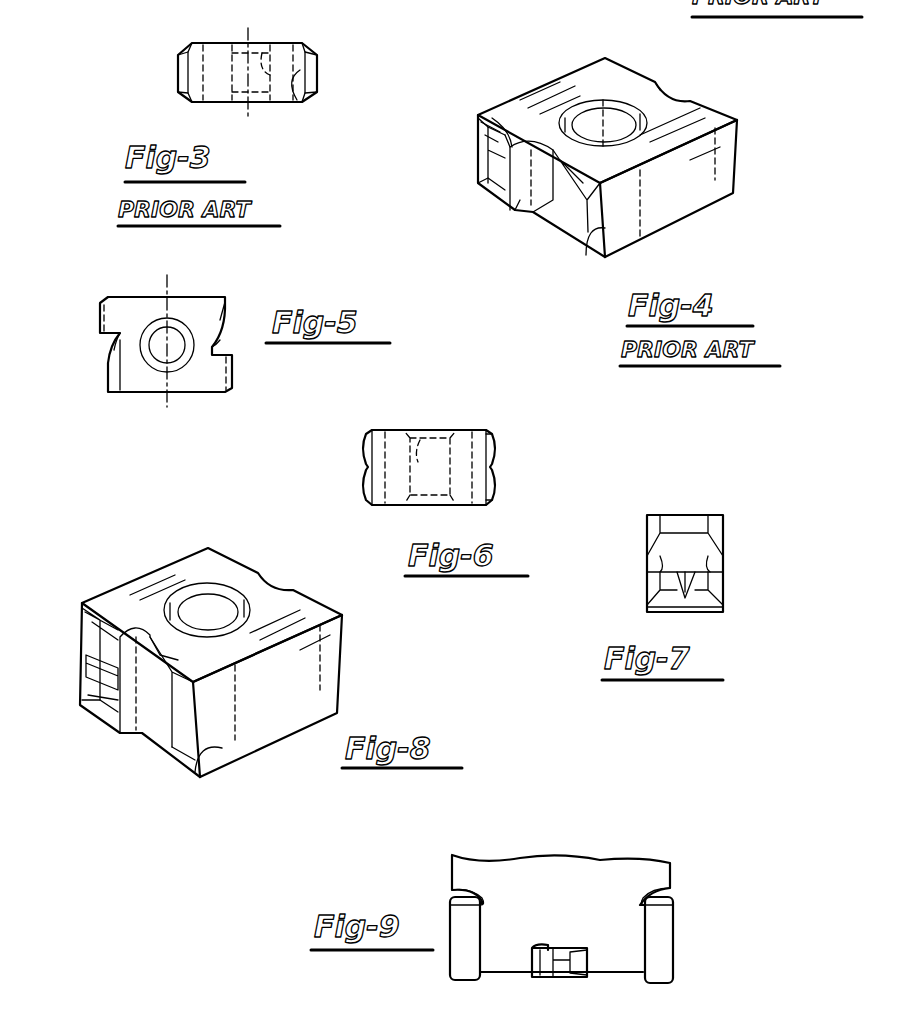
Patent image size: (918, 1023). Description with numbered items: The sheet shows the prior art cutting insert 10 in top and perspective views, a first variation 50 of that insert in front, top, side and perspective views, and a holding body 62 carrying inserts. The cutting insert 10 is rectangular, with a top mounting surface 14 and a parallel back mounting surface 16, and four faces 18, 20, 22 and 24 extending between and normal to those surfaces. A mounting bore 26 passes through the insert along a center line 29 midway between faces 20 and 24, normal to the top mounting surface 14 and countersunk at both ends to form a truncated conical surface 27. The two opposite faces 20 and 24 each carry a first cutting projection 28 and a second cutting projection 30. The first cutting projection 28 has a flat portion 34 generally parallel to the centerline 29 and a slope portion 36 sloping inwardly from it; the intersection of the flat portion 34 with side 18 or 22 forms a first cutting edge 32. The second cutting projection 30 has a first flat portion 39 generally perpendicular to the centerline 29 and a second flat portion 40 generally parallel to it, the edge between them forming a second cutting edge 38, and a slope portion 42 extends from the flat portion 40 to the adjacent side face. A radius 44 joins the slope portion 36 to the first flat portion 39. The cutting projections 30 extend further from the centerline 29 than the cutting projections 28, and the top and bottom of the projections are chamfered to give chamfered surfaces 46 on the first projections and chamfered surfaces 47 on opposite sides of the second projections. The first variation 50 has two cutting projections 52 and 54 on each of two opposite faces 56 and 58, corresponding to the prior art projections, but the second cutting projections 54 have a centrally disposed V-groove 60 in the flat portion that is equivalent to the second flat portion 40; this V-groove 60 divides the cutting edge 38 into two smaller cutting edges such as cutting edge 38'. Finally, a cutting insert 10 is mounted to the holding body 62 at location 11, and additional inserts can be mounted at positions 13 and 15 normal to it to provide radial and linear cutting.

In FIG. 9, the cutting insert 10 is at (675, 937).
In FIG. 9, the location 11 is at (533, 947).
In FIG. 9, the position 13 is at (653, 885).
In FIG. 3, the top mounting surface 14 is at (227, 103).
In FIG. 9, the position 15 is at (473, 883).
In FIG. 3, the back mounting surface 16 is at (292, 42).
In FIG. 4, the face 18 is at (545, 82).
In FIG. 5, the face 18 is at (187, 297).
In FIG. 7, the face 18 is at (667, 515).
In FIG. 4, the face 20 is at (682, 77).
In FIG. 8, the face 20 is at (277, 572).
In FIG. 4, the face 22 is at (682, 193).
In FIG. 5, the face 22 is at (195, 393).
In FIG. 7, the face 22 is at (713, 610).
In FIG. 8, the face 22 is at (273, 713).
In FIG. 4, the face 24 is at (500, 222).
In FIG. 8, the face 24 is at (130, 745).
In FIG. 3, the mounting bore 26 is at (268, 45).
In FIG. 4, the mounting bore 26 is at (593, 115).
In FIG. 5, the mounting bore 26 is at (155, 355).
In FIG. 6, the mounting bore 26 is at (422, 440).
In FIG. 8, the mounting bore 26 is at (212, 610).
In FIG. 3, the truncated conical surface 27 is at (240, 42).
In FIG. 4, the truncated conical surface 27 is at (630, 97).
In FIG. 6, the truncated conical surface 27 is at (415, 430).
In FIG. 3, the first cutting projection 28 is at (187, 80).
In FIG. 3, the center line 29 is at (262, 122).
In FIG. 3, the second cutting projection 30 is at (320, 63).
In FIG. 4, the first cutting edge 32 is at (602, 258).
In FIG. 8, the first cutting edge 32 is at (220, 767).
In FIG. 4, the flat portion 34 is at (575, 222).
In FIG. 4, the slope portion 36 is at (523, 217).
In FIG. 4, the second cutting edge 38 is at (476, 205).
In FIG. 4, the first flat portion 39 is at (520, 202).
In FIG. 4, the second flat portion 40 is at (500, 167).
In FIG. 4, the slope portion 42 is at (483, 150).
In FIG. 4, the radius 44 is at (510, 113).
In FIG. 3, the chamfered surface 46 is at (307, 48).
In FIG. 4, the chamfered surface 46 is at (487, 127).
In FIG. 3, the chamfered surface 47 is at (313, 53).
In FIG. 5, the first variation 50 is at (150, 285).
In FIG. 6, the first variation 50 is at (468, 425).
In FIG. 8, the first variation 50 is at (117, 572).
In FIG. 5, the cutting projection 52 is at (223, 313).
In FIG. 6, the cutting projection 52 is at (490, 487).
In FIG. 7, the cutting projection 52 is at (680, 522).
In FIG. 8, the cutting projection 52 is at (183, 743).
In FIG. 5, the second cutting projection 54 is at (102, 320).
In FIG. 6, the second cutting projection 54 is at (363, 450).
In FIG. 7, the second cutting projection 54 is at (700, 582).
In FIG. 5, the face 56 is at (217, 340).
In FIG. 5, the face 58 is at (112, 337).
In FIG. 8, the face 58 is at (137, 633).
In FIG. 6, the V-groove 60 is at (363, 470).
In FIG. 7, the V-groove 60 is at (677, 600).
In FIG. 8, the V-groove 60 is at (85, 673).
In FIG. 9, the holding body 62 is at (595, 860).
In FIG. 7, the cutting edge 38' is at (657, 554).
In FIG. 8, the cutting edge 38' is at (72, 639).